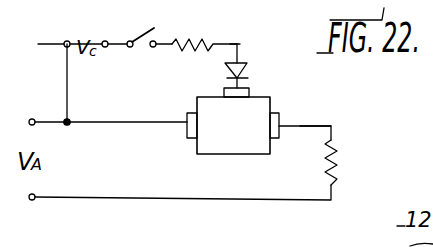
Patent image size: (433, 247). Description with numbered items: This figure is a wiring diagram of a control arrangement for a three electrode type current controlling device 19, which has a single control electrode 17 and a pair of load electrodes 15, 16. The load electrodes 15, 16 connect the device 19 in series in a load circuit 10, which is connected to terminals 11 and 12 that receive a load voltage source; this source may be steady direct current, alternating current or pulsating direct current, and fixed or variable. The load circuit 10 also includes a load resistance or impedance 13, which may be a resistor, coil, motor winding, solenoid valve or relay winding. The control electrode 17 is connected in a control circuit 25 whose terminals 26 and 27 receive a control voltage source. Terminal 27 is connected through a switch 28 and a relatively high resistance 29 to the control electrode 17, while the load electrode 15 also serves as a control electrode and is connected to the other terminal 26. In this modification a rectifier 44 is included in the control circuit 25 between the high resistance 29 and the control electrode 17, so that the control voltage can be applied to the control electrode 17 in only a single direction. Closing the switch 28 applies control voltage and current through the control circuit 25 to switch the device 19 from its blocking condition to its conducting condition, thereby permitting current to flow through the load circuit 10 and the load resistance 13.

The terminal 26 is at (40, 33).
The terminal 27 is at (105, 41).
The switch 28 is at (147, 31).
The relatively high resistance 29 is at (194, 38).
The control circuit 25 is at (237, 44).
The rectifier 44 is at (247, 70).
The control electrode 17 is at (249, 91).
The three electrode type device 19 is at (213, 146).
The load electrode 15 is at (186, 138).
The load electrode 16 is at (278, 142).
The load circuit 10 is at (334, 112).
The load resistance 13 is at (363, 147).
The terminal 11 is at (27, 107).
The terminal 12 is at (30, 200).